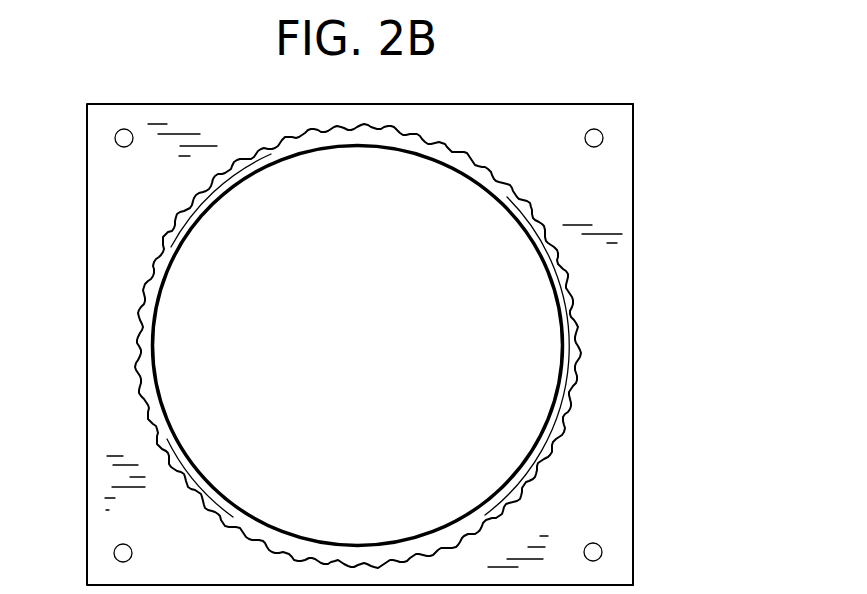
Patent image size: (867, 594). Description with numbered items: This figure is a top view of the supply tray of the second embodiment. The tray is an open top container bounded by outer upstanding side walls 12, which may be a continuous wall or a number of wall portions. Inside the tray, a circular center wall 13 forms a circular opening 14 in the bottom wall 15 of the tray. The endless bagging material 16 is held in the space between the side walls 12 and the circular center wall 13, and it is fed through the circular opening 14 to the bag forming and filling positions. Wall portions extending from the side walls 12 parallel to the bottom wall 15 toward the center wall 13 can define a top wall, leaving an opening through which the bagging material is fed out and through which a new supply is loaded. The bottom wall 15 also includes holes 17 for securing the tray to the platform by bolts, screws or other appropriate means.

The upstanding side walls 12 is at (87, 258).
The circular center wall 13 is at (508, 204).
The circular opening 14 is at (490, 323).
The bottom wall 15 is at (615, 496).
The endless bagging material 16 is at (458, 157).
The holes 17 is at (115, 138).